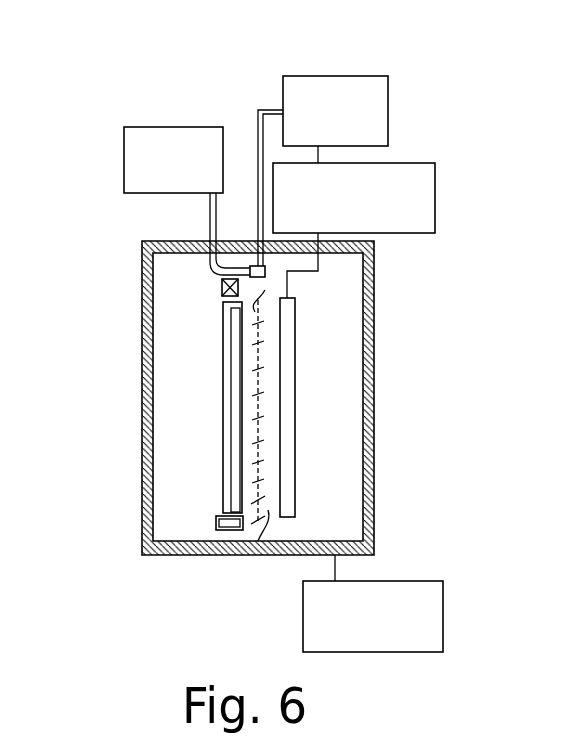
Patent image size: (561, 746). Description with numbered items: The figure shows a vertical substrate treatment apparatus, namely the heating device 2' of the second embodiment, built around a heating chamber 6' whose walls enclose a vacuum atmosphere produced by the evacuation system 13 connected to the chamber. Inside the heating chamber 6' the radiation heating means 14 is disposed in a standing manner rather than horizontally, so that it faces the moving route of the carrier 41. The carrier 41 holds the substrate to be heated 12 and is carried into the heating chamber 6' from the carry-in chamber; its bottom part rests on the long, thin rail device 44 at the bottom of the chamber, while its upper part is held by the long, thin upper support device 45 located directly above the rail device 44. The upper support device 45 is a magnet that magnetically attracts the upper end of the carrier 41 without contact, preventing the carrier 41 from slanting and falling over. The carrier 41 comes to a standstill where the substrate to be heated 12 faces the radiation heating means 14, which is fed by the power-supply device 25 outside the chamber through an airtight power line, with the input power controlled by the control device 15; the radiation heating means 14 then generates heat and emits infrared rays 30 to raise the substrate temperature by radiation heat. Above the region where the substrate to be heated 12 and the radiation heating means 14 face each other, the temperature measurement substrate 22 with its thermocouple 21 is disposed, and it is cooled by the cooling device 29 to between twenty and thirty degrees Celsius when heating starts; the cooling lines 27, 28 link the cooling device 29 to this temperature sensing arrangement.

The heating device 2' is at (270, 330).
The heating chamber 6' is at (258, 432).
The substrate to be heated 12 is at (258, 428).
The evacuation system 13 is at (435, 632).
The radiation heating means 14 is at (295, 383).
The control device 15 is at (333, 76).
The thermocouple 21 is at (268, 110).
The temperature measurement substrate 22 is at (265, 277).
The power-supply device 25 is at (435, 212).
The coolant supply pipe 27 is at (186, 186).
The coolant return pipe 28 is at (216, 220).
The cooling device 29 is at (150, 127).
The emitted infrared rays 30 is at (265, 555).
The carrier 41 is at (223, 385).
The rail device 44 is at (216, 520).
The upper support device 45 is at (222, 290).